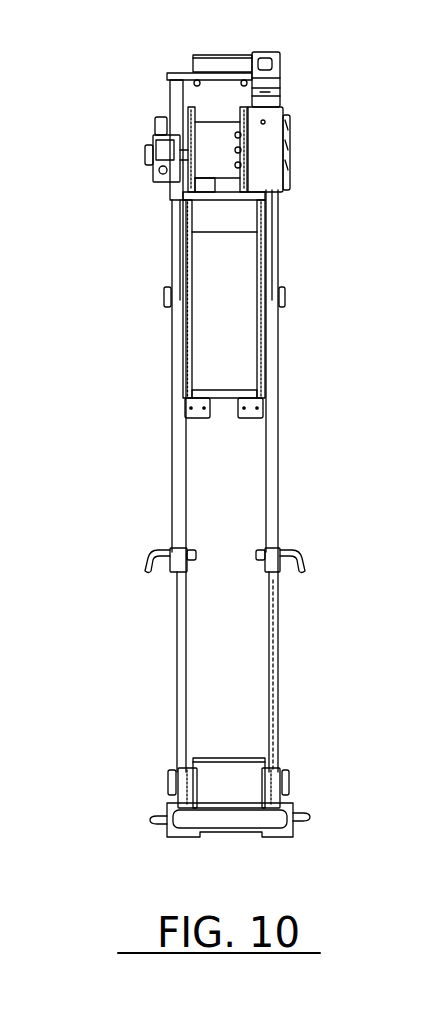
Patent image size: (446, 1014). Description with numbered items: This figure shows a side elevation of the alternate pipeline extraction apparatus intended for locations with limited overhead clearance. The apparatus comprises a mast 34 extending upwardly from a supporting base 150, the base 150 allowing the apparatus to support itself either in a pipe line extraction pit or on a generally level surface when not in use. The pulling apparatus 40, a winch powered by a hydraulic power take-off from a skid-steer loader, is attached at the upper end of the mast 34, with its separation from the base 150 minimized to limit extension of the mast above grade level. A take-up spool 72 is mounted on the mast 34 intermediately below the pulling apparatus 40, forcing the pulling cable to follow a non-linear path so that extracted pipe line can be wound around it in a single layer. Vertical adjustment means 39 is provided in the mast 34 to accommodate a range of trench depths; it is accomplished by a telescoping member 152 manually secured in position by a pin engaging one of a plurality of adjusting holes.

The mast 34 is at (288, 451).
The pulling apparatus 40 is at (273, 143).
The take-up spool 72 is at (250, 286).
The vertical adjustment means 39 is at (348, 608).
The telescoping member 152 is at (284, 663).
The base 150 is at (322, 819).